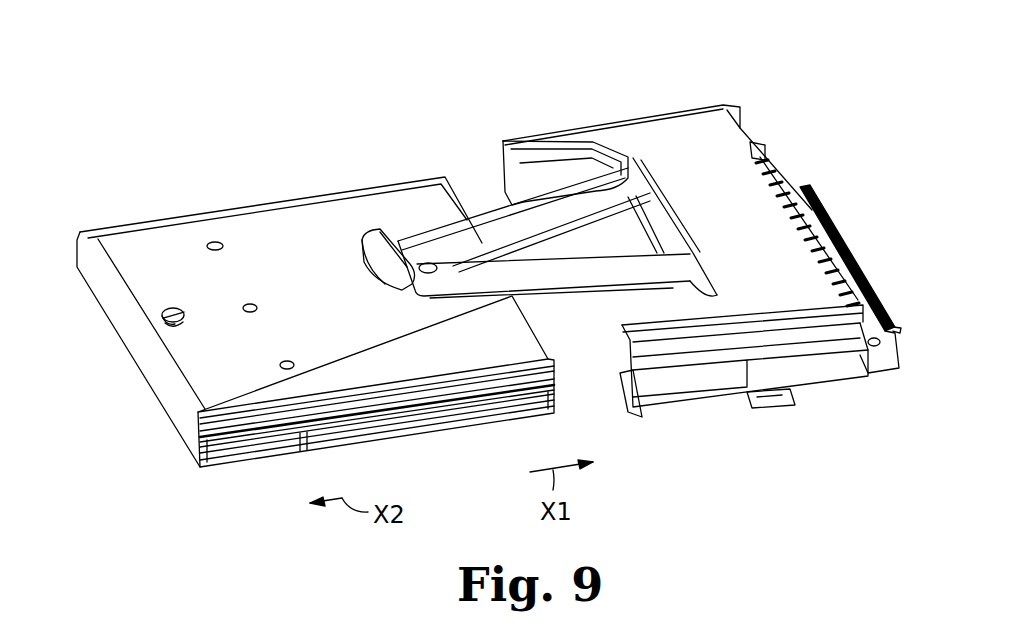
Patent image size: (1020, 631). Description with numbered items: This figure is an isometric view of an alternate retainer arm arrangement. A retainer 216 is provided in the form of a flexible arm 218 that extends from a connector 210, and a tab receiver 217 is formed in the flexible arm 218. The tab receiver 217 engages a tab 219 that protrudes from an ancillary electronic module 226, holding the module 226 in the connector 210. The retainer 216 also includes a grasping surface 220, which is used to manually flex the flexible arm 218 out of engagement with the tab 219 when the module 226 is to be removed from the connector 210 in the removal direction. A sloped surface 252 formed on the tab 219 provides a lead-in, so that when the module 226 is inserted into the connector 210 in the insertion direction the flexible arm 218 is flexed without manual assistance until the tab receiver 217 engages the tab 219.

The connector 210 is at (650, 103).
The retainer 216 is at (383, 230).
The tab receiver 217 is at (432, 273).
The flexible arm 218 is at (577, 290).
The tab 219 is at (171, 323).
The grasping surface 220 is at (362, 255).
The ancillary electronic module 226 is at (205, 207).
The sloped surface 252 is at (180, 310).